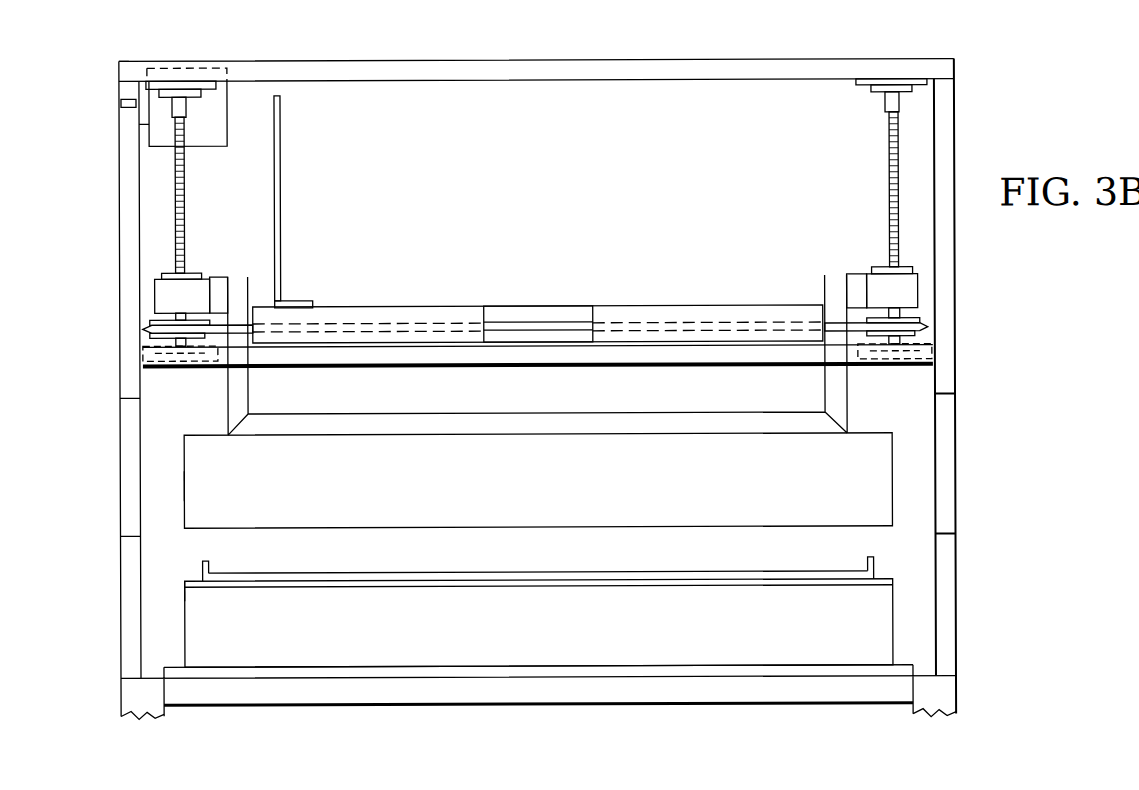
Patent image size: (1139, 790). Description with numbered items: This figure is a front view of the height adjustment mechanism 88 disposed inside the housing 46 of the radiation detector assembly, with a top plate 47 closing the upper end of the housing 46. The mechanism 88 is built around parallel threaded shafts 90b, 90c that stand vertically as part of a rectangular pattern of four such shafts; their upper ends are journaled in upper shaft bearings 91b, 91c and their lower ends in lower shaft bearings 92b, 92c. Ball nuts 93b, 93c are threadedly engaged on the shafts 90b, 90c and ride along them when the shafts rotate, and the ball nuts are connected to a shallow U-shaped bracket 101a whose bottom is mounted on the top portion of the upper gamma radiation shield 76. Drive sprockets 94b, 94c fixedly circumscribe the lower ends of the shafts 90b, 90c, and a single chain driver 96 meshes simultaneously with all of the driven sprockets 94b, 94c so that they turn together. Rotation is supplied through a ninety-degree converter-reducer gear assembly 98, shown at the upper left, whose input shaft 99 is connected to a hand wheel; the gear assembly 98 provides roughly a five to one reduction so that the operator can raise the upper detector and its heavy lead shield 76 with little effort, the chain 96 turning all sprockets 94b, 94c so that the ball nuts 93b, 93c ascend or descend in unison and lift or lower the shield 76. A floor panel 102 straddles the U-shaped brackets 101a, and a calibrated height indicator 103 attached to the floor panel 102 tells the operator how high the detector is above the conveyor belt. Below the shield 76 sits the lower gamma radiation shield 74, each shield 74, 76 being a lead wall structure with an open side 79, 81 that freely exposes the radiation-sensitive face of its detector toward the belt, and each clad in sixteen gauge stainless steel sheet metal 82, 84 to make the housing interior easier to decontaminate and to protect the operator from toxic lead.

The housing 46 is at (100, 63).
The top plate of frame 47 is at (493, 62).
The height adjustment mechanism 88 is at (118, 191).
The input shaft 99 is at (130, 104).
The converter-reducer gear assembly 98 is at (221, 125).
The upper shaft bearing 91b is at (208, 93).
The upper shaft bearing 91c is at (866, 86).
The threaded shaft 90b is at (186, 190).
The threaded shaft 90c is at (889, 186).
The calibrated height indicator 103 is at (282, 218).
The ball nut 93b is at (155, 300).
The ball nut 93c is at (918, 296).
The drive sprocket 94b is at (150, 328).
The drive sprocket 94c is at (930, 328).
The lower shaft bearing 92b is at (150, 352).
The lower shaft bearing 92c is at (932, 357).
The U-shaped bracket 101a is at (228, 392).
The floor panel 102 is at (678, 310).
The chain driver 96 is at (520, 322).
The upper gamma radiation shield 76 is at (565, 487).
The lower gamma radiation shield 74 is at (565, 637).
The open side 79 is at (618, 565).
The open side 81 is at (348, 566).
The stainless steel sheet metal 82 is at (184, 483).
The stainless steel sheet metal 84 is at (193, 578).